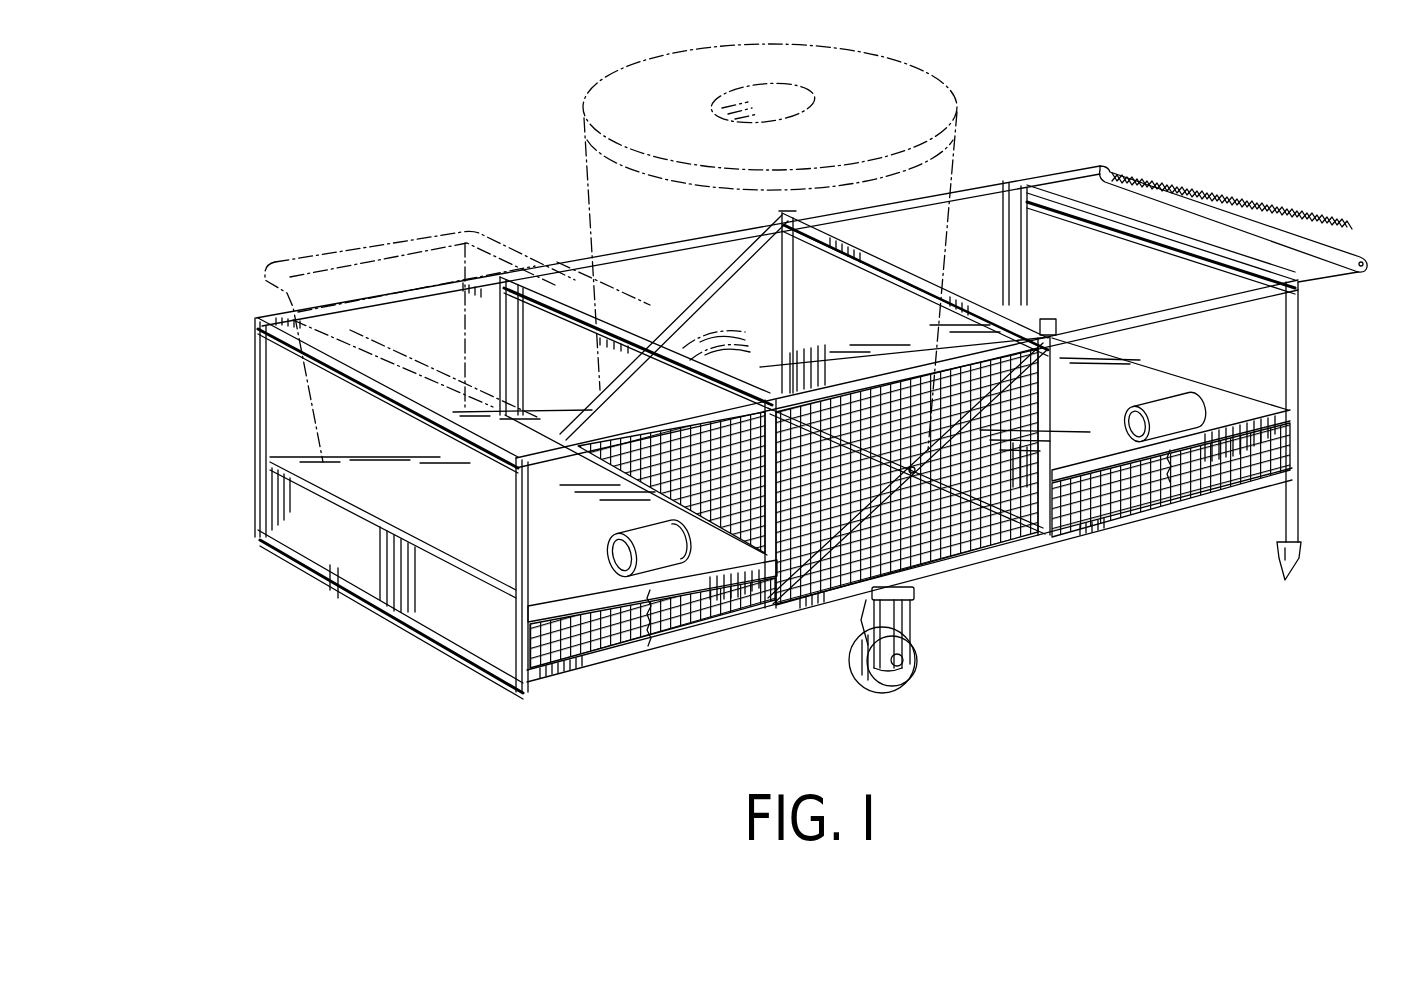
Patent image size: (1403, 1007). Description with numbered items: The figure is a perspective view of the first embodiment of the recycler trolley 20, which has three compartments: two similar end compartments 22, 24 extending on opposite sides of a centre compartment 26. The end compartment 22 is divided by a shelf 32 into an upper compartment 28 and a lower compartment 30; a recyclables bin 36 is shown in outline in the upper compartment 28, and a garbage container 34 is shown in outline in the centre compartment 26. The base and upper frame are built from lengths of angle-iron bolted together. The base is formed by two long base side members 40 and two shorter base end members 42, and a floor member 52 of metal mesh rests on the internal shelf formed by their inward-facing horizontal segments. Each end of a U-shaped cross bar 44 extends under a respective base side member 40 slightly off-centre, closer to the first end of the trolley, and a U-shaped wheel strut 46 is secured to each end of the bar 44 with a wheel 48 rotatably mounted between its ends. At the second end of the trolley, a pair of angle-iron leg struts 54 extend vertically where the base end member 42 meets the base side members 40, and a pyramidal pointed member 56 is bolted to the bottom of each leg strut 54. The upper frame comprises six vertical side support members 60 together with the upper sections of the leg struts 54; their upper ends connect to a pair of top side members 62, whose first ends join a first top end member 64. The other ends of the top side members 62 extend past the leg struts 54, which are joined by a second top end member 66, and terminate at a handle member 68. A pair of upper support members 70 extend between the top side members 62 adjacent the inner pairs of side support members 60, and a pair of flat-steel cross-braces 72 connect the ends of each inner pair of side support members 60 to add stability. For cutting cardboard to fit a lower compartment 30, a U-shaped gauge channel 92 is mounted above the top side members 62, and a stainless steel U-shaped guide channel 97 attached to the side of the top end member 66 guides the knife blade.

The recycler trolley 20 is at (784, 425).
The end compartment 22 is at (652, 589).
The end compartment 24 is at (1166, 535).
The centre compartment 26 is at (921, 490).
The upper compartment 28 is at (283, 403).
The lower compartment 30 is at (474, 511).
The shelf 32 is at (272, 465).
The garbage container 34 is at (603, 118).
The recyclables bin 36 is at (410, 262).
The base side member 40 is at (703, 625).
The base end member 42 is at (370, 592).
The U-shaped cross bar 44 is at (917, 590).
The wheel strut 46 is at (906, 632).
The wheel 48 is at (858, 650).
The floor member 52 is at (582, 640).
The leg strut 54 is at (1303, 540).
The pointed member 56 is at (1285, 581).
The side support member 60 is at (1297, 428).
The top side member 62 is at (987, 190).
The first top end member 64 is at (288, 345).
The second top end member 66 is at (1143, 222).
The handle member 68 is at (1234, 203).
The upper support member 70 is at (883, 277).
The cross-brace 72 is at (930, 446).
The U-shaped gauge channel 92 is at (872, 245).
The U-shaped guide channel 97 is at (1107, 203).